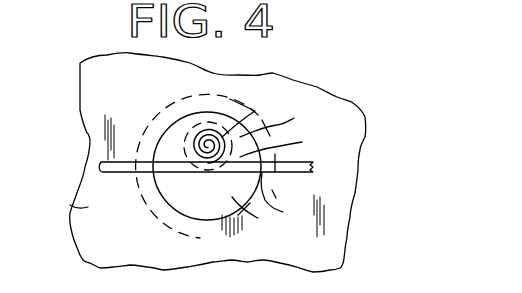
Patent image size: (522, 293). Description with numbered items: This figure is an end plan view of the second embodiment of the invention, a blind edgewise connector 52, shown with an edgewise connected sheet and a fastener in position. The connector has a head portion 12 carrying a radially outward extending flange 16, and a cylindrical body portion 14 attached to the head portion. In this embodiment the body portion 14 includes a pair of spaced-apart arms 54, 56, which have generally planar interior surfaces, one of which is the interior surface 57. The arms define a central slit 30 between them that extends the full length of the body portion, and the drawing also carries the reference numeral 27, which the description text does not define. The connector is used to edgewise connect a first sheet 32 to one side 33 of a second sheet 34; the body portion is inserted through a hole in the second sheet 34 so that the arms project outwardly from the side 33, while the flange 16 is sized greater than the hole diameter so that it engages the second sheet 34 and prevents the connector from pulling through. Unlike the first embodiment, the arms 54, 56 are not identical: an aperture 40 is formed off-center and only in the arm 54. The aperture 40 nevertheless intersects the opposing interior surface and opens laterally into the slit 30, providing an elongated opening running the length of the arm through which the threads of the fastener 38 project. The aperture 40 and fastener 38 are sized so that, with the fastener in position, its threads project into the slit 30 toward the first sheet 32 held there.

The head portion 12 is at (208, 106).
The body portion 14 is at (167, 207).
The flange 16 is at (235, 100).
The outer flange 27 is at (167, 132).
The slit 30 is at (270, 173).
The first sheet 32 is at (101, 167).
The side 33 is at (78, 208).
The second sheet 34 is at (118, 236).
The fastener 38 is at (255, 111).
The aperture 40 is at (283, 151).
The blind edgewise connector 52 is at (133, 120).
The arm 54 is at (294, 118).
The arm 56 is at (249, 215).
The interior surface 57 is at (284, 202).